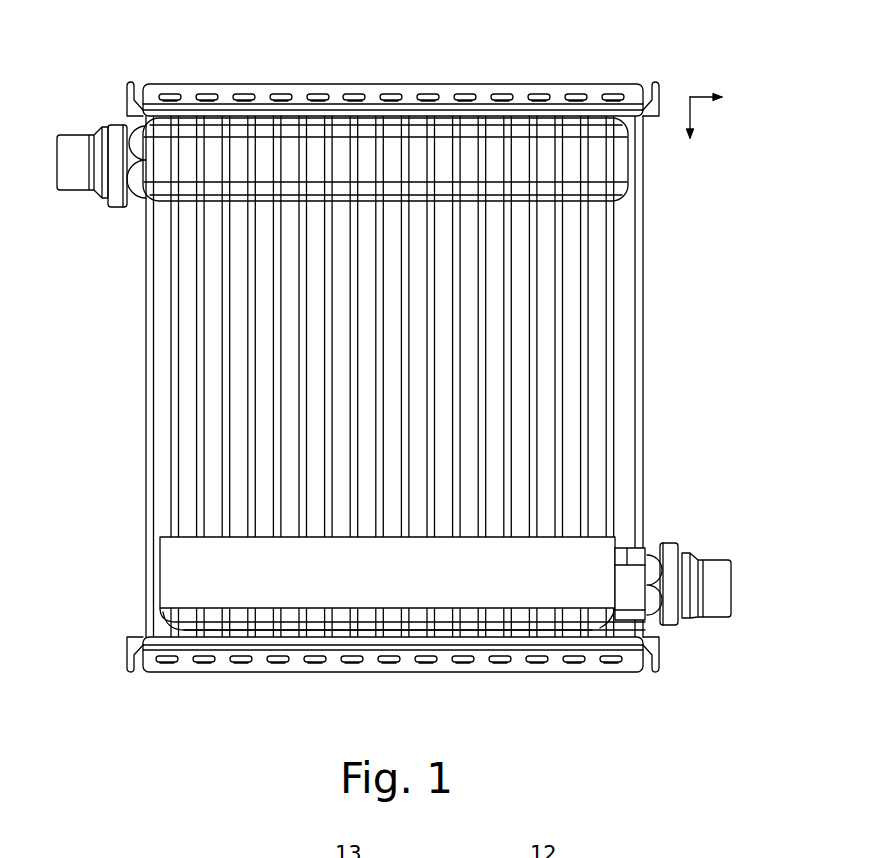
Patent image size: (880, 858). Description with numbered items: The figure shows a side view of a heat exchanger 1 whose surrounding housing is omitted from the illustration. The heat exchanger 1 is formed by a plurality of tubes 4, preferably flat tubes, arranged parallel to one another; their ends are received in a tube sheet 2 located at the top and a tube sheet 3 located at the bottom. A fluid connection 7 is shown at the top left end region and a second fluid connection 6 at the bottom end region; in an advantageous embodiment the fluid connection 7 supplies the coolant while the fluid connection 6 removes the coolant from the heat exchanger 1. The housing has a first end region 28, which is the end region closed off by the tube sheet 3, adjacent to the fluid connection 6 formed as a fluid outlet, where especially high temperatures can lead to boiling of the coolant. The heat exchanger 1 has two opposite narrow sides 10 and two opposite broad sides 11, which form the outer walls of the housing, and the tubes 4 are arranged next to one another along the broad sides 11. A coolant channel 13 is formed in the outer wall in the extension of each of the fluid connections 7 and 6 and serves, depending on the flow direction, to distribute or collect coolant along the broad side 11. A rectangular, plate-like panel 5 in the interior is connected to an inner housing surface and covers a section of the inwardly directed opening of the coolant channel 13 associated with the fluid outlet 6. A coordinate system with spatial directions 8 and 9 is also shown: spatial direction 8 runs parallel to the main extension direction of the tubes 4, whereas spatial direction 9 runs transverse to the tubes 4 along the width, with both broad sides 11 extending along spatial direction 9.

The heat exchanger 1 is at (523, 86).
The tube sheet 2 is at (578, 95).
The tube sheet 3 is at (290, 660).
The tubes 4 is at (627, 278).
The panel 5 is at (605, 540).
The fluid connection 6 is at (693, 558).
The fluid connection 7 is at (73, 136).
The spatial direction 8 is at (692, 122).
The spatial direction 9 is at (690, 97).
The narrow sides 10 is at (148, 470).
The broad sides 11 is at (204, 395).
The coolant channel 13 is at (600, 176).
The first end region 28 is at (385, 628).